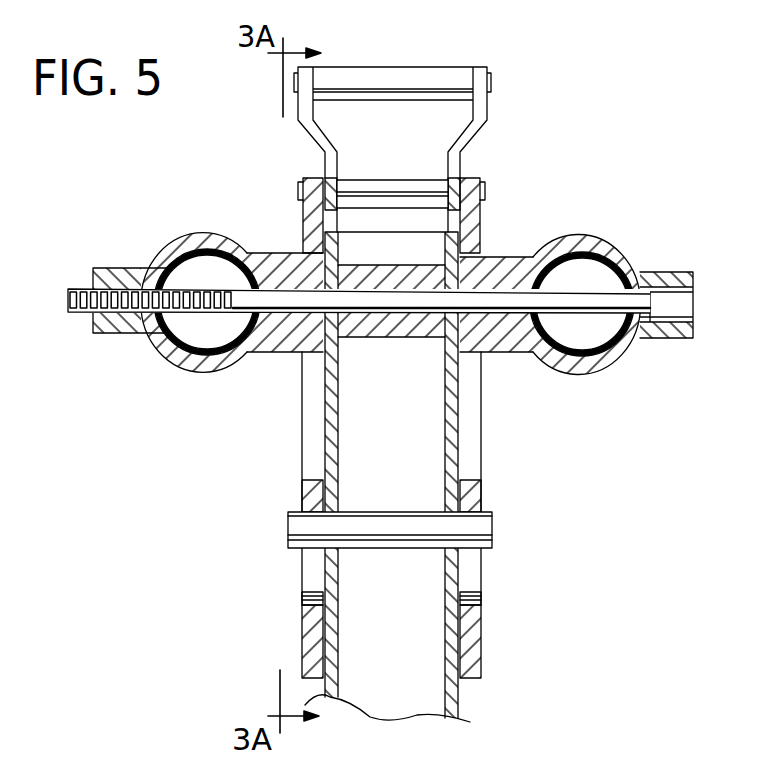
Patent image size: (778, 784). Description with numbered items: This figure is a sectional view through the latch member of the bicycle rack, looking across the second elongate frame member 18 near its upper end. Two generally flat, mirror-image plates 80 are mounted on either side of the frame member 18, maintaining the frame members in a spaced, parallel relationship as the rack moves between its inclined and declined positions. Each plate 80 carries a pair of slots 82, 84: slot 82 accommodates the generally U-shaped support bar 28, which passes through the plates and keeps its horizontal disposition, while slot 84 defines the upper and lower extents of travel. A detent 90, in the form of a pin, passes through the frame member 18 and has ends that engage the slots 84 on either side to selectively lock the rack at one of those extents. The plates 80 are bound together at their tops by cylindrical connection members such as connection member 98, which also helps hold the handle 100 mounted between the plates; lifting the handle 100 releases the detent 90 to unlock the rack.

The handle 100 is at (398, 67).
The connection member 98 is at (400, 188).
The plate 80 is at (302, 227).
The support bar 28 is at (202, 235).
The slot 82 is at (312, 477).
The detent 90 is at (293, 527).
The slot 84 is at (310, 600).
The second elongate frame member 18 is at (460, 703).